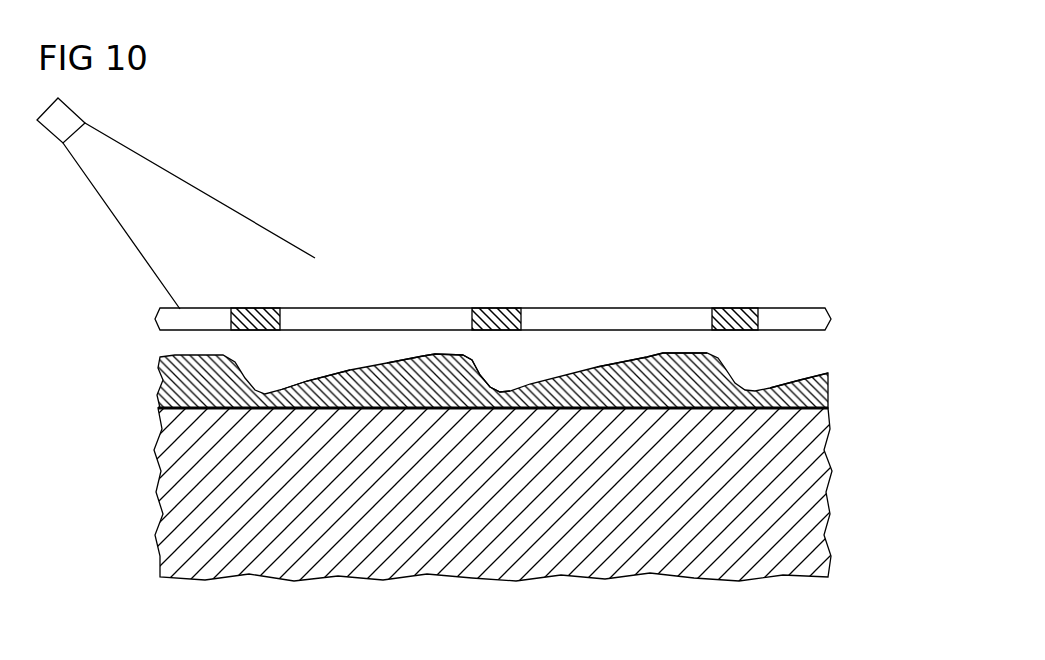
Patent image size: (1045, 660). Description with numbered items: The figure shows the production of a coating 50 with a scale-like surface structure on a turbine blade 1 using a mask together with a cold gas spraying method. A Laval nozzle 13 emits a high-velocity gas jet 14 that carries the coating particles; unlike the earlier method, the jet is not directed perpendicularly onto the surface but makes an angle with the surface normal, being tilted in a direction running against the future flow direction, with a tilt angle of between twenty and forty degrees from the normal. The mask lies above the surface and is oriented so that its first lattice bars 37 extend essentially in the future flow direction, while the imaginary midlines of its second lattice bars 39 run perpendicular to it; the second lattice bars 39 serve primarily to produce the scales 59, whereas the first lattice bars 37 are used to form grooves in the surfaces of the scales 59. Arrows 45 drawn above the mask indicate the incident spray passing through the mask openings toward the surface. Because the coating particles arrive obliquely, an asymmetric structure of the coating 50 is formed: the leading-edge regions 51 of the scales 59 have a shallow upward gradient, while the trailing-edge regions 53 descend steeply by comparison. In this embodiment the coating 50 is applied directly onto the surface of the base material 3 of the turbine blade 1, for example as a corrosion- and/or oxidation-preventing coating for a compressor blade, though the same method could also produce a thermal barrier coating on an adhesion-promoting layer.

The turbine blade 1 is at (872, 408).
The base material 3 is at (820, 492).
The Laval nozzle 13 is at (55, 126).
The high-velocity gas jet 14 is at (203, 205).
The first lattice bars 37 is at (410, 318).
The second lattice bars 39 is at (263, 310).
The radiation passing through mask 45 is at (453, 290).
The coating 50 is at (820, 392).
The leading-edge regions 51 is at (311, 378).
The trailing-edge regions 53 is at (483, 368).
The scales 59 is at (398, 385).